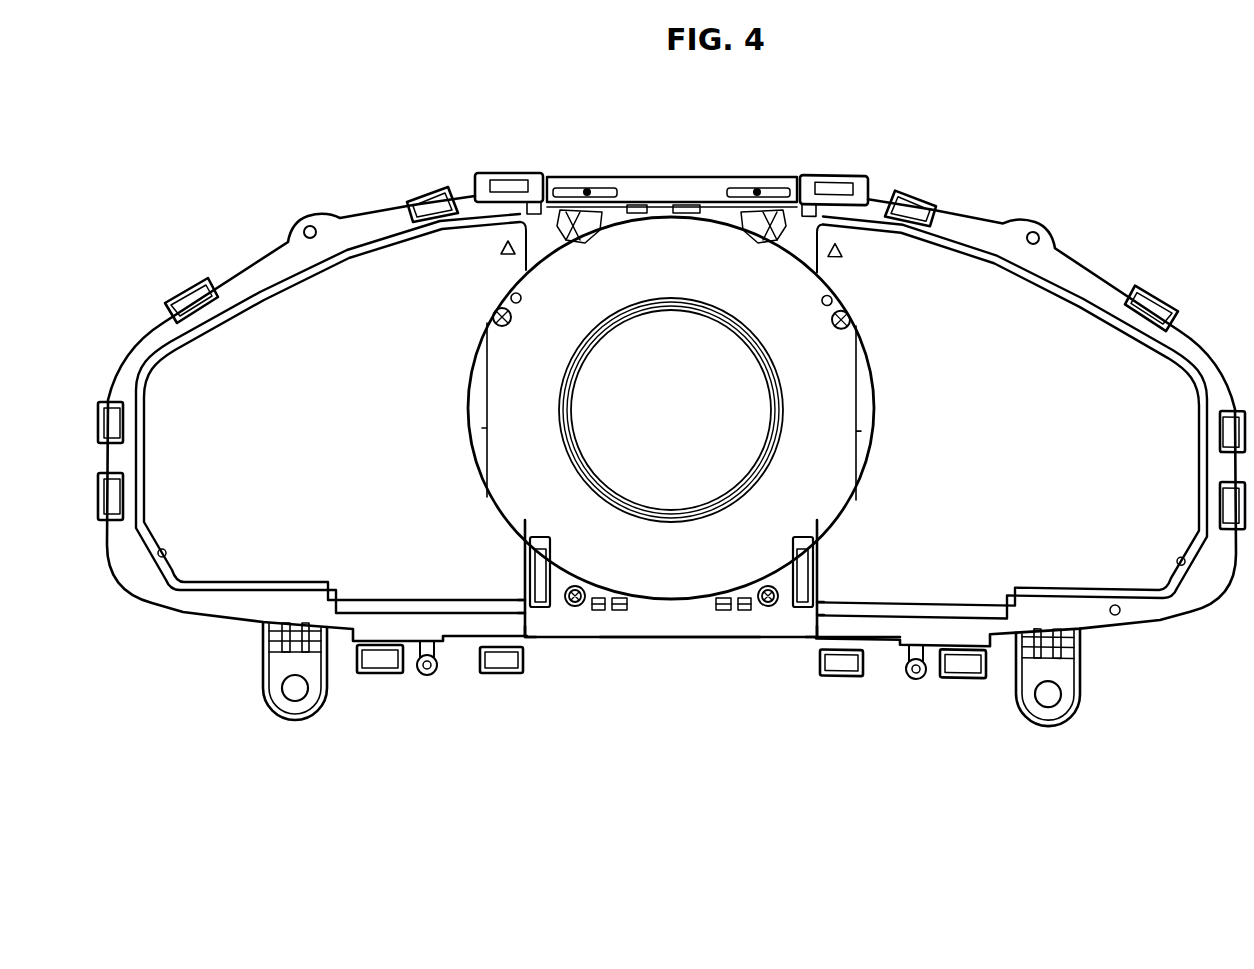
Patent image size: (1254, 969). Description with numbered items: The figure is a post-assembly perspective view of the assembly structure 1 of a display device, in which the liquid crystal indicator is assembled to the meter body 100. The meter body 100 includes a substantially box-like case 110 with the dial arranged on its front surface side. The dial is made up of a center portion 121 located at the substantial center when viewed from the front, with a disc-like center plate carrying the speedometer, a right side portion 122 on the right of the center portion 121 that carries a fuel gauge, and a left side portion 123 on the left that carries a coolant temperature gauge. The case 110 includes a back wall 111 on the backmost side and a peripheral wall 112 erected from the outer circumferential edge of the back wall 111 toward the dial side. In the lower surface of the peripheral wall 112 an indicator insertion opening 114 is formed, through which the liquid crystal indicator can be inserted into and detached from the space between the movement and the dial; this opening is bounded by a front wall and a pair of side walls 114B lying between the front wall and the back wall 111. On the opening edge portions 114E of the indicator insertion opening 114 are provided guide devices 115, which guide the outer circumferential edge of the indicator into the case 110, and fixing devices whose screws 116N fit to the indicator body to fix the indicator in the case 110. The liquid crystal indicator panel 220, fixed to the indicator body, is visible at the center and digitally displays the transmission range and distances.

The assembly structure 1 is at (288, 118).
The meter body 100 is at (262, 246).
The case 110 is at (912, 760).
The back wall 111 is at (712, 632).
The peripheral wall 112 is at (890, 634).
The indicator insertion opening 114 is at (652, 682).
The side walls 114B is at (522, 593).
The opening edge portions 114E is at (534, 648).
The guide devices 115 is at (556, 566).
The screws 116N is at (572, 609).
The center portion 121 is at (640, 243).
The right side portion 122 is at (977, 290).
The left side portion 123 is at (378, 288).
The liquid crystal indicator panel 220 is at (733, 402).